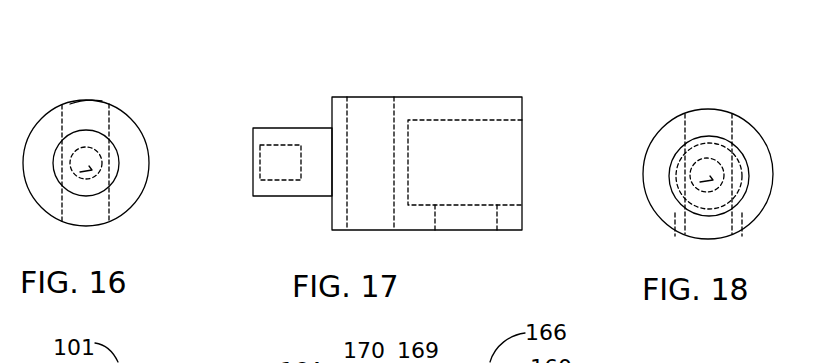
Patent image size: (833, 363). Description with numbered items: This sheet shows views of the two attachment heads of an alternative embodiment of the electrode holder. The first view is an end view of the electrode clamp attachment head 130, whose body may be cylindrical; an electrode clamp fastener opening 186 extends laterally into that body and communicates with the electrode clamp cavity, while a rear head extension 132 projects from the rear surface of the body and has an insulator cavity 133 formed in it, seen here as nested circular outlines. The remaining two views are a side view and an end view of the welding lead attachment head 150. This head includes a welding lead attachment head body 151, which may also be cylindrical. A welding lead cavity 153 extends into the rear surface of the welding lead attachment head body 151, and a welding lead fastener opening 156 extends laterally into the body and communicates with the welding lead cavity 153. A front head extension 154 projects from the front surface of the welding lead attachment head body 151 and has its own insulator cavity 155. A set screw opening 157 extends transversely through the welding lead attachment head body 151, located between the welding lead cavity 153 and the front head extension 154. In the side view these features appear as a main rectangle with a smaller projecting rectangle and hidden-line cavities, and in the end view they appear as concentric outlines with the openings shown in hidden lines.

In FIG. 16, the electrode clamp attachment head 130 is at (131, 114).
In FIG. 16, the rear head extension 132 is at (116, 159).
In FIG. 16, the insulator cavity 133 is at (120, 183).
In FIG. 16, the electrode clamp fastener opening 186 is at (97, 102).
In FIG. 17, the welding lead attachment head 150 is at (493, 95).
In FIG. 18, the welding lead attachment head 150 is at (722, 108).
In FIG. 17, the welding lead attachment head body 151 is at (418, 105).
In FIG. 18, the welding lead attachment head body 151 is at (658, 179).
In FIG. 17, the welding lead cavity 153 is at (480, 121).
In FIG. 18, the welding lead cavity 153 is at (712, 133).
In FIG. 17, the front head extension 154 is at (302, 127).
In FIG. 18, the front head extension 154 is at (740, 138).
In FIG. 17, the insulator cavity 155 is at (268, 170).
In FIG. 18, the insulator cavity 155 is at (742, 185).
In FIG. 17, the welding lead fastener opening 156 is at (497, 208).
In FIG. 18, the welding lead fastener opening 156 is at (733, 248).
In FIG. 17, the set screw opening 157 is at (395, 111).
In FIG. 18, the set screw opening 157 is at (707, 241).